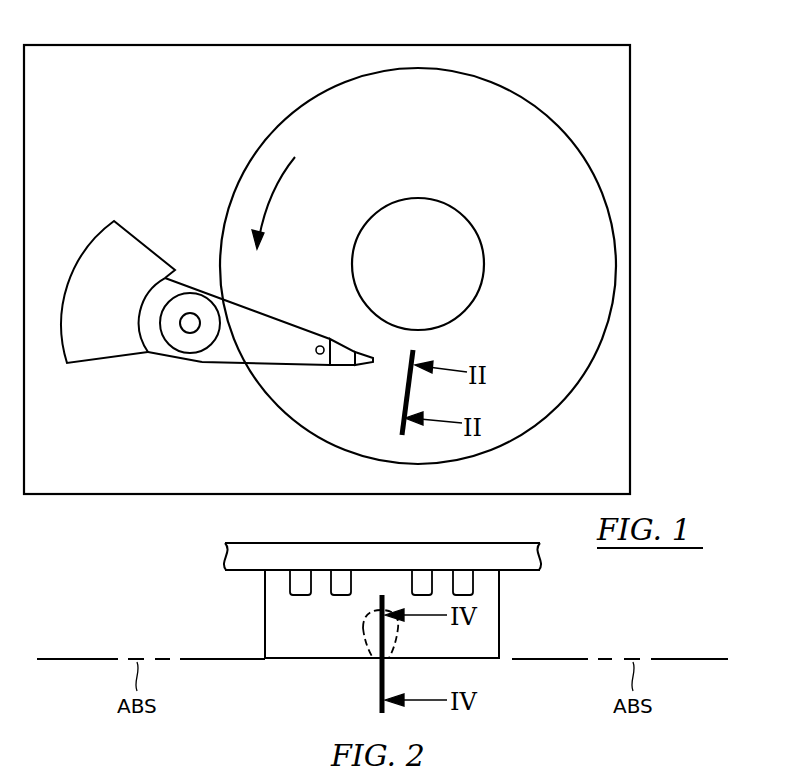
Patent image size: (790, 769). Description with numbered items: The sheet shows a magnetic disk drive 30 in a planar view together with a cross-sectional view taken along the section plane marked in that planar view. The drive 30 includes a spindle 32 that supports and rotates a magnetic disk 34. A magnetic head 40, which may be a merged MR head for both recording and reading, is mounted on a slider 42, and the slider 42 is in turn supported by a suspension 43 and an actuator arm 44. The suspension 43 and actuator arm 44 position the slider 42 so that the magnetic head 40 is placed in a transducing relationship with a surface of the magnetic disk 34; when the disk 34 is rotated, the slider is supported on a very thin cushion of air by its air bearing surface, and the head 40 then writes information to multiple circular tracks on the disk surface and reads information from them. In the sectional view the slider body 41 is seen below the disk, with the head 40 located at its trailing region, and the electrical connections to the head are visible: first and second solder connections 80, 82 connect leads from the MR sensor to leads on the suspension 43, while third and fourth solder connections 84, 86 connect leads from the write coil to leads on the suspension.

In FIG. 1, the magnetic disk drive 30 is at (642, 54).
In FIG. 1, the spindle 32 is at (461, 212).
In FIG. 1, the magnetic disk 34 is at (553, 281).
In FIG. 1, the actuator arm 44 is at (258, 312).
In FIG. 1, the suspension 43 is at (337, 367).
In FIG. 1, the slider 42 is at (375, 364).
In FIG. 2, the slider body 41 is at (265, 614).
In FIG. 2, the magnetic head 40 is at (365, 633).
In FIG. 2, the first solder connection 80 is at (297, 574).
In FIG. 2, the second solder connection 82 is at (463, 574).
In FIG. 2, the third solder connection 84 is at (345, 574).
In FIG. 2, the fourth solder connection 86 is at (420, 574).